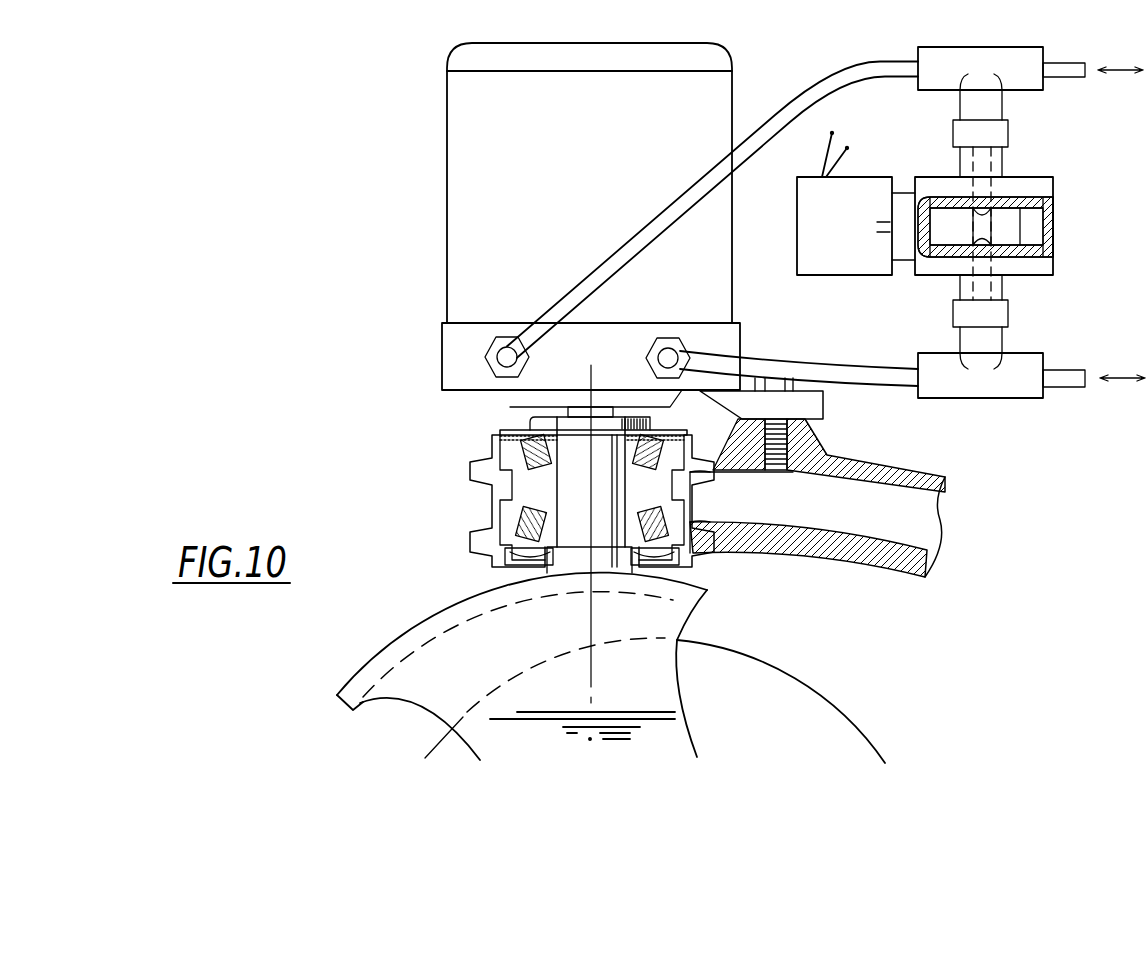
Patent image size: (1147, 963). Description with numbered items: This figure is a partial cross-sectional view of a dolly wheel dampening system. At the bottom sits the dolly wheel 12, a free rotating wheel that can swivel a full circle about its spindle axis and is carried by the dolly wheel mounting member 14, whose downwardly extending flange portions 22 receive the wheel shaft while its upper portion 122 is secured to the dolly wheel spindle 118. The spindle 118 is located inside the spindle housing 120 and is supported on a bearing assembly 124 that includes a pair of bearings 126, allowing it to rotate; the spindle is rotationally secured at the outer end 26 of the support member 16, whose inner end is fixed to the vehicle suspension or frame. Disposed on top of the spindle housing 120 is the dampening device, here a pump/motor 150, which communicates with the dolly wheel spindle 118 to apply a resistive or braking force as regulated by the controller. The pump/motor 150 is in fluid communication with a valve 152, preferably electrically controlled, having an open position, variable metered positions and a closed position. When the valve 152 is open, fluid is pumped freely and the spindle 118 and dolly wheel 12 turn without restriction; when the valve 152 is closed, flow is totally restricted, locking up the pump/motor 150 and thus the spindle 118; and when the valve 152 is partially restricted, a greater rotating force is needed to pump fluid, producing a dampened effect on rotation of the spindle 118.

The dolly wheel 12 is at (775, 680).
The dolly wheel mounting member 14 is at (655, 677).
The support member 16 is at (883, 535).
The flange portions 22 is at (478, 728).
The outer end 26 is at (703, 517).
The dolly wheel spindle 118 is at (560, 500).
The spindle housing 120 is at (493, 438).
The upper portion 122 is at (445, 613).
The bearing assembly 124 is at (530, 492).
The bearings 126 is at (668, 500).
The pump/motor 150 is at (461, 159).
The valve 152 is at (867, 180).